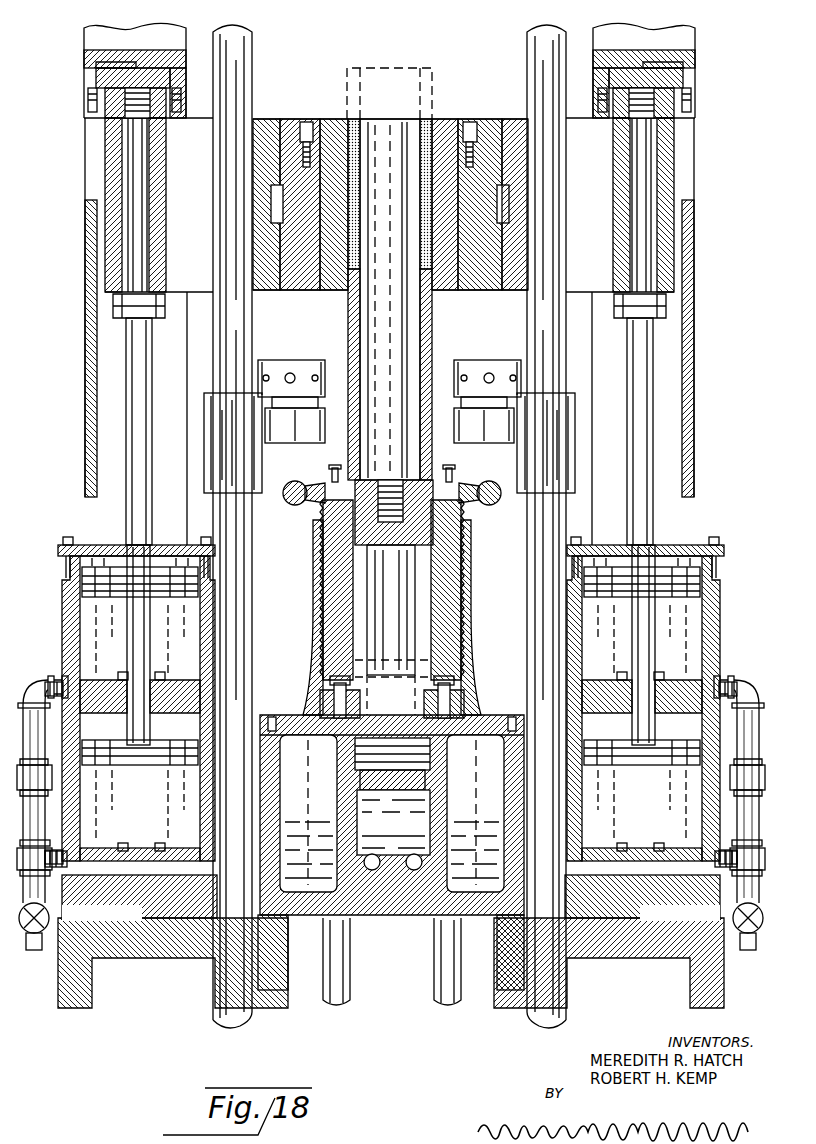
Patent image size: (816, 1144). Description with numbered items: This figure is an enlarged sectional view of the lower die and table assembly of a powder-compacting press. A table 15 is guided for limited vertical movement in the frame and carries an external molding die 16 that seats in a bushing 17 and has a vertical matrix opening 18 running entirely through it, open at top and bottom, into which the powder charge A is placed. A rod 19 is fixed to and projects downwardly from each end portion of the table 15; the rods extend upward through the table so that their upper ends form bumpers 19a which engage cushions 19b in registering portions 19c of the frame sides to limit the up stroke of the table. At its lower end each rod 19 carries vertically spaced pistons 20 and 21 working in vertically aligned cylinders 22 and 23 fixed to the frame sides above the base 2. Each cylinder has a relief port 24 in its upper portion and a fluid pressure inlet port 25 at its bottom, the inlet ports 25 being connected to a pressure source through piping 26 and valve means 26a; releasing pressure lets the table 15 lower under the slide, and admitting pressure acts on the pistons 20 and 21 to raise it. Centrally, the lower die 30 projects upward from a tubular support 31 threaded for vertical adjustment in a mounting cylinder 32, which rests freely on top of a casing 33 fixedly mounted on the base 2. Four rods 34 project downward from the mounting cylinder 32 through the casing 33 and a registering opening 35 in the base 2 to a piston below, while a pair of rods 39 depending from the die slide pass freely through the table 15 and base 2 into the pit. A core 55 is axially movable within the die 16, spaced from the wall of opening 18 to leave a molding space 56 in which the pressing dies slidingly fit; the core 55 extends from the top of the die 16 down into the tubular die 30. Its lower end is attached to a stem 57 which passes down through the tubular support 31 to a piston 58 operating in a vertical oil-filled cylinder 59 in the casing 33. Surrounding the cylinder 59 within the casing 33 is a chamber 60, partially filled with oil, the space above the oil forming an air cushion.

The base 2 is at (724, 932).
The table 15 is at (522, 126).
The external molding die 16 is at (440, 130).
The bushing 17 is at (480, 292).
The matrix opening 18 is at (352, 290).
The rod 19 is at (147, 380).
The bumper 19a is at (110, 108).
The cushion 19b is at (98, 80).
The registering portion of frame side 19c is at (98, 60).
The piston 20 is at (82, 592).
The piston 21 is at (116, 762).
The cylinder 22 is at (185, 641).
The cylinder 23 is at (178, 793).
The relief port 24 is at (72, 548).
The fluid pressure inlet port 25 is at (82, 690).
The piping 26 is at (36, 695).
The valve means 26a is at (50, 918).
The die 30 is at (432, 352).
The tubular support 31 is at (340, 567).
The mounting cylinder 32 is at (458, 622).
The casing 33 is at (378, 918).
The rod 34 is at (435, 980).
The registering opening 35 is at (494, 971).
The rod 39 is at (222, 1018).
The core 55 is at (403, 321).
The molding space 56 is at (352, 135).
The stem 57 is at (405, 615).
The piston 58 is at (406, 765).
The vertical cylinder 59 is at (360, 808).
The chamber 60 is at (502, 809).
The powder charge A is at (358, 124).